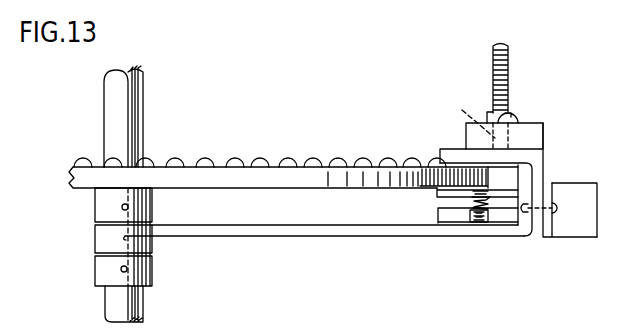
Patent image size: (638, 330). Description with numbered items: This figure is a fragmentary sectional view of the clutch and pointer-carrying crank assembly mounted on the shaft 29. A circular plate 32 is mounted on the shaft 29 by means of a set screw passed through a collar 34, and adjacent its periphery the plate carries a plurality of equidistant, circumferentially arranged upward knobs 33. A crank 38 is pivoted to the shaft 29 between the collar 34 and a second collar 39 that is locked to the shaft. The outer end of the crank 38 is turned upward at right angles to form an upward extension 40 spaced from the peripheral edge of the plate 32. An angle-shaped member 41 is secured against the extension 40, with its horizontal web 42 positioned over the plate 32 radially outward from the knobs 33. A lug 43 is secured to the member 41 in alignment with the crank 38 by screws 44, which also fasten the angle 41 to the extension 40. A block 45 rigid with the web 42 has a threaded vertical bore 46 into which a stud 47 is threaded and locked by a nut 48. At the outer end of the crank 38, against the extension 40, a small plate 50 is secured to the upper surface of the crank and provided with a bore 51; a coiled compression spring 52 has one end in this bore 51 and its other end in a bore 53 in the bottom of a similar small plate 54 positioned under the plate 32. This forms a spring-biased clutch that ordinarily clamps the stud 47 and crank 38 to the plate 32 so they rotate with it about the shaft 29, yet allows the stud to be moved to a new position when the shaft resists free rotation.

The shaft 29 is at (143, 100).
The circular plate 32 is at (200, 182).
The knobs 33 is at (262, 162).
The collar 34 is at (95, 207).
The crank 38 is at (343, 238).
The second collar 39 is at (95, 266).
The upward extension 40 is at (527, 177).
The angle-shaped member 41 is at (543, 156).
The horizontal web 42 is at (447, 152).
The lug 43 is at (586, 230).
The screws 44 is at (556, 203).
The block 45 is at (532, 126).
The threaded vertical bore 46 is at (472, 116).
The stud 47 is at (510, 50).
The nut 48 is at (488, 118).
The small plate 50 is at (438, 212).
The bore 51 is at (475, 220).
The coiled compression spring 52 is at (481, 225).
The bore 53 is at (489, 197).
The small plate 54 is at (437, 193).